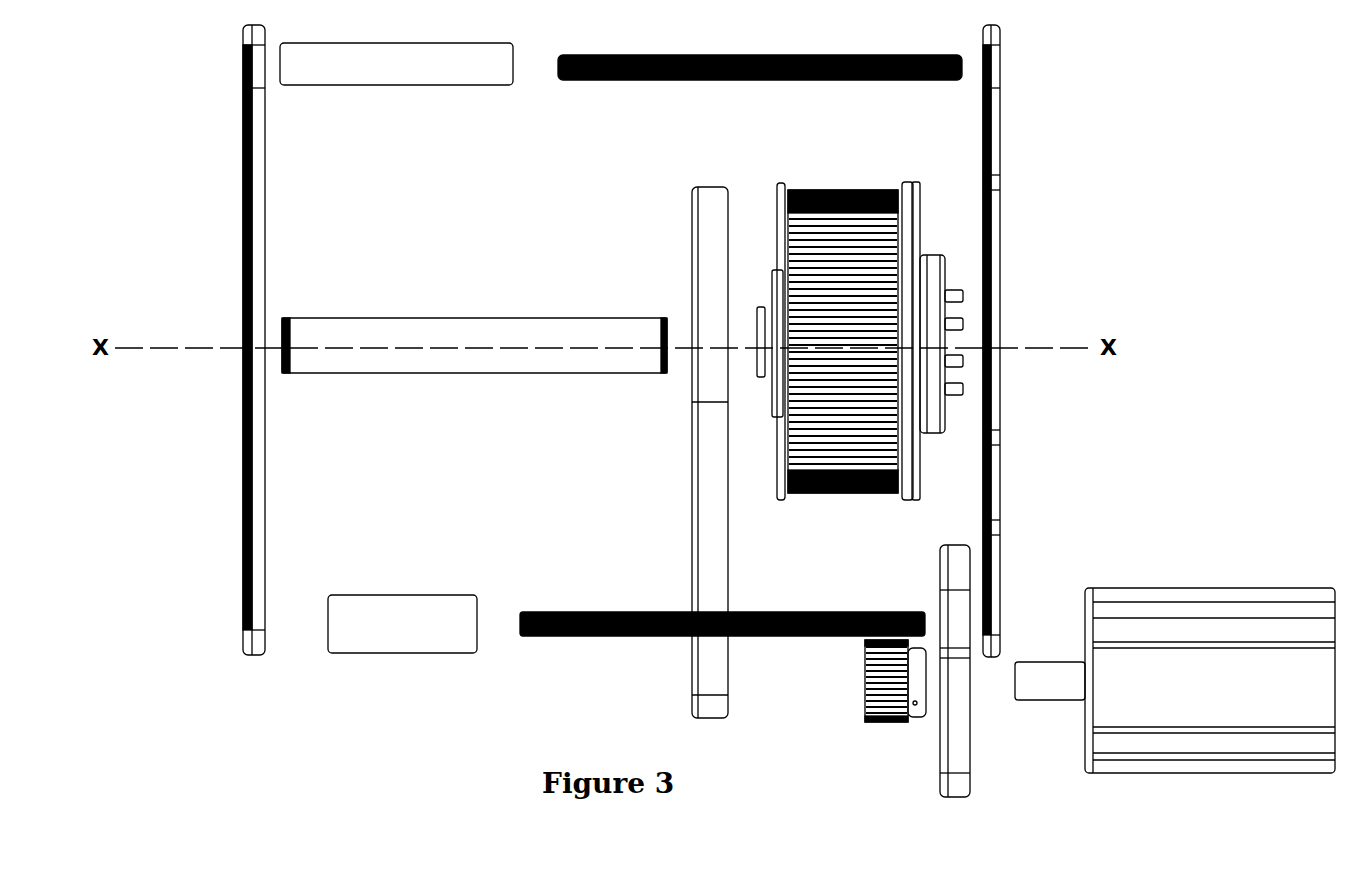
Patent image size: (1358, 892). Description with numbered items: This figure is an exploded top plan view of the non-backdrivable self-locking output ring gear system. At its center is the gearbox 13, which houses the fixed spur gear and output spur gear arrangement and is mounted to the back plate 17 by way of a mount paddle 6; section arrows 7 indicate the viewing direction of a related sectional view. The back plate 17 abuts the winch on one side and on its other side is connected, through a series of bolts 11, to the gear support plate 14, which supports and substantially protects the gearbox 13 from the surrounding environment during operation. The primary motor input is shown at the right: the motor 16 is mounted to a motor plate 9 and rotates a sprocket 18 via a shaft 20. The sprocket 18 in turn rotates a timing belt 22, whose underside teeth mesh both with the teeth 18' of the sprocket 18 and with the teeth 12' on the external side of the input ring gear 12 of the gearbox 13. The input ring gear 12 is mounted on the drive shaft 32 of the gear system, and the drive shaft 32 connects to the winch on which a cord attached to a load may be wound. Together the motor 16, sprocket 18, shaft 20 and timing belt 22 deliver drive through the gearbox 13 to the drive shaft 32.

The mount paddle 6 is at (972, 333).
The section line 7- 7 is at (845, 190).
The motor plate 9 is at (958, 723).
The bolts 11 is at (655, 80).
The input ring gear 12 is at (822, 303).
The teeth 12' is at (837, 514).
The gearbox 13 is at (778, 468).
The gear support plate 14 is at (252, 143).
The motor 16 is at (1260, 597).
The back plate 17 is at (1000, 115).
The sprocket 18 is at (857, 700).
The teeth 18' is at (891, 751).
The shaft 20 is at (1058, 665).
The timing belt 22 is at (708, 428).
The drive shaft 32 is at (500, 318).